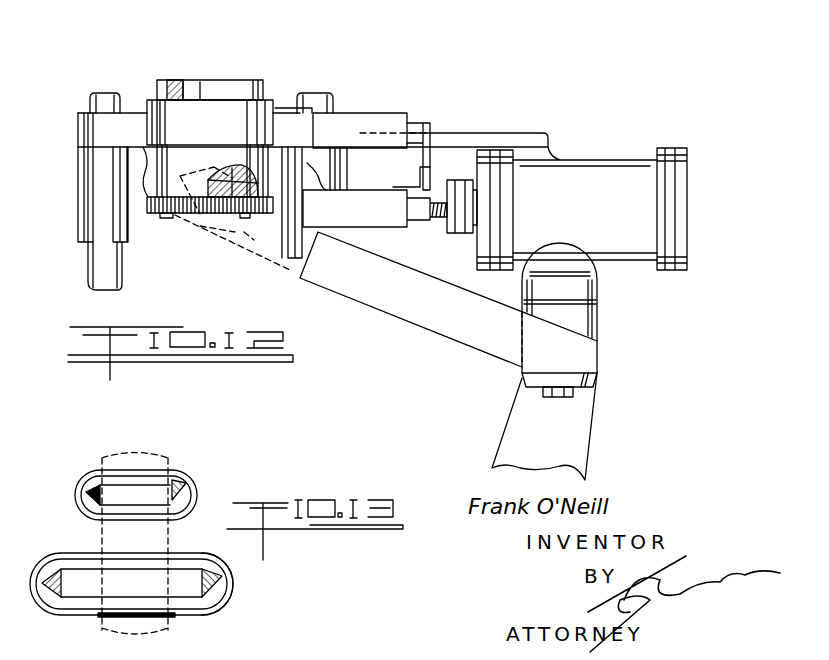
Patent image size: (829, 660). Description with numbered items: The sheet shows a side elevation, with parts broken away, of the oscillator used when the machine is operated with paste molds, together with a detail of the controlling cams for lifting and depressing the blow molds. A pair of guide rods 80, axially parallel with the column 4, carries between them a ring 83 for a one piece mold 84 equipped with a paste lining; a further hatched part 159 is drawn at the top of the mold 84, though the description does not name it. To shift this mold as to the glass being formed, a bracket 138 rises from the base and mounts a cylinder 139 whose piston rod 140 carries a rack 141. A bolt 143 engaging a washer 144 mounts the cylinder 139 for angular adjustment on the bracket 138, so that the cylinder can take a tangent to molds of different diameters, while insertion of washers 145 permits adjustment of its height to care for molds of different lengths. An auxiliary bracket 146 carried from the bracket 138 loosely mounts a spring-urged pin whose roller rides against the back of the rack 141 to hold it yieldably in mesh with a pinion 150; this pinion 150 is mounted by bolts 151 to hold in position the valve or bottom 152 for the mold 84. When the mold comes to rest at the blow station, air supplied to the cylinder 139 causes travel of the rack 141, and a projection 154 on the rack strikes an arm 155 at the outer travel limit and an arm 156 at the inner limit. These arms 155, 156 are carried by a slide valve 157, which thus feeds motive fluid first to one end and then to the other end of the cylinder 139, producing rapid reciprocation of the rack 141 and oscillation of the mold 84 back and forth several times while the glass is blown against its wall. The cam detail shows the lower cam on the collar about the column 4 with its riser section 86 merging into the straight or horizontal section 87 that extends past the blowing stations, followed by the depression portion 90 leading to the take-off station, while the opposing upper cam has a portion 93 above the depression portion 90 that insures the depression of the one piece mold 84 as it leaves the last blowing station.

In FIG. 13, the column 4 is at (168, 460).
In FIG. 12, the guide rods 80 is at (93, 100).
In FIG. 12, the ring 83 is at (328, 100).
In FIG. 12, the one piece mold 84 is at (260, 82).
In FIG. 13, the riser section 86 is at (50, 567).
In FIG. 13, the straight or horizontal section 87 is at (148, 560).
In FIG. 13, the depression portion 90 is at (230, 588).
In FIG. 13, the cam portion 93 is at (194, 505).
In FIG. 12, the bracket 138 is at (590, 418).
In FIG. 12, the cylinder 139 is at (612, 160).
In FIG. 12, the piston rod 140 is at (433, 224).
In FIG. 12, the rack 141 is at (358, 218).
In FIG. 12, the bolt 143 is at (538, 396).
In FIG. 12, the washer 144 is at (595, 382).
In FIG. 12, the washers 145 is at (597, 310).
In FIG. 12, the auxiliary bracket 146 is at (390, 313).
In FIG. 12, the pinion 150 is at (147, 204).
In FIG. 12, the bolts 151 is at (170, 220).
In FIG. 12, the valve or bottom 152 is at (227, 174).
In FIG. 12, the projection 154 is at (420, 172).
In FIG. 12, the arm 155 is at (317, 188).
In FIG. 12, the arm 156 is at (430, 155).
In FIG. 12, the slide valve 157 is at (415, 122).
In FIG. 12, the packing 159 is at (187, 90).